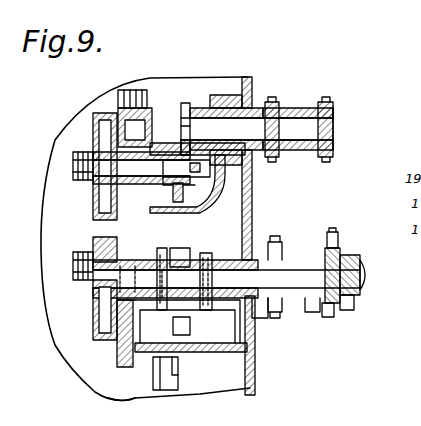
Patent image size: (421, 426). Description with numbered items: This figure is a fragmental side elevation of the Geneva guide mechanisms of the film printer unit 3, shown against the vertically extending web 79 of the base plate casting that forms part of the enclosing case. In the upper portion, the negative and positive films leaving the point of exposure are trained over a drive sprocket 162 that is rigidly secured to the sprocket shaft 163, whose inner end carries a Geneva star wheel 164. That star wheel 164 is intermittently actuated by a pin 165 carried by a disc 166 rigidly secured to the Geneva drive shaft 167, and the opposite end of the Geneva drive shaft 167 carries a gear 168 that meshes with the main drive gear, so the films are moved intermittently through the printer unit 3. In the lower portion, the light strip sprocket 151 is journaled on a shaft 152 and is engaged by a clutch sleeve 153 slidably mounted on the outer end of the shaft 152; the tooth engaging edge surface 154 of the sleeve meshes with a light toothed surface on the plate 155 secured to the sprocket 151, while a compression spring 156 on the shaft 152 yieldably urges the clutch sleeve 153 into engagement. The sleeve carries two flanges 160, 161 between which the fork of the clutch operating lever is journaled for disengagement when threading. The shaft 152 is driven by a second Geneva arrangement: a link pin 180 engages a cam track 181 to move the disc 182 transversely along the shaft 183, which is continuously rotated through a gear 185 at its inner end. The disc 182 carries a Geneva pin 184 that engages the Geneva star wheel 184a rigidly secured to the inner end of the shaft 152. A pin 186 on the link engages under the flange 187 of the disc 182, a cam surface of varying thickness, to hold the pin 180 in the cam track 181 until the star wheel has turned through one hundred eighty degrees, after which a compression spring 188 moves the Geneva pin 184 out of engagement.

The film printer unit 3 is at (246, 81).
The vertically extending web 79 is at (126, 388).
The sprocket 151 is at (283, 244).
The shaft 152 is at (296, 300).
The clutch sleeve 153 is at (340, 255).
The tooth engaging edge surface 154 is at (337, 240).
The plate 155 is at (312, 300).
The compression spring 156 is at (349, 298).
The flange 160 is at (365, 298).
The flange 161 is at (342, 300).
The drive sprocket 162 is at (333, 107).
The sprocket shaft 163 is at (308, 125).
The Geneva star wheel 164 is at (188, 105).
The pin 165 is at (195, 138).
The disc 166 is at (197, 255).
The Geneva drive shaft 167 is at (152, 168).
The gear 168 is at (93, 118).
The pin 180 is at (100, 274).
The cam track 181 is at (196, 326).
The disc 182 is at (178, 352).
The shaft 183 is at (100, 305).
The Geneva pin 184 is at (256, 318).
The Geneva star wheel 184a is at (200, 270).
The gear 185 is at (97, 253).
The pin 186 is at (173, 270).
The flange 187 is at (126, 358).
The compression spring 188 is at (205, 262).